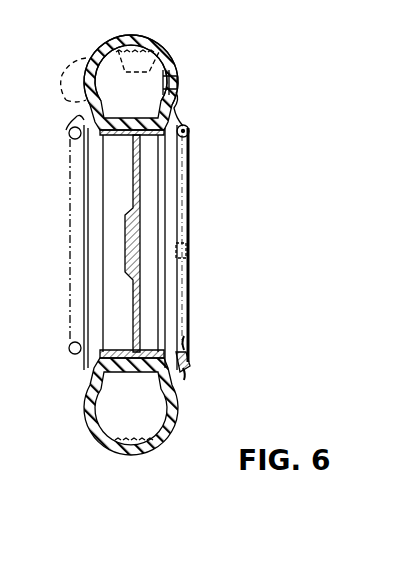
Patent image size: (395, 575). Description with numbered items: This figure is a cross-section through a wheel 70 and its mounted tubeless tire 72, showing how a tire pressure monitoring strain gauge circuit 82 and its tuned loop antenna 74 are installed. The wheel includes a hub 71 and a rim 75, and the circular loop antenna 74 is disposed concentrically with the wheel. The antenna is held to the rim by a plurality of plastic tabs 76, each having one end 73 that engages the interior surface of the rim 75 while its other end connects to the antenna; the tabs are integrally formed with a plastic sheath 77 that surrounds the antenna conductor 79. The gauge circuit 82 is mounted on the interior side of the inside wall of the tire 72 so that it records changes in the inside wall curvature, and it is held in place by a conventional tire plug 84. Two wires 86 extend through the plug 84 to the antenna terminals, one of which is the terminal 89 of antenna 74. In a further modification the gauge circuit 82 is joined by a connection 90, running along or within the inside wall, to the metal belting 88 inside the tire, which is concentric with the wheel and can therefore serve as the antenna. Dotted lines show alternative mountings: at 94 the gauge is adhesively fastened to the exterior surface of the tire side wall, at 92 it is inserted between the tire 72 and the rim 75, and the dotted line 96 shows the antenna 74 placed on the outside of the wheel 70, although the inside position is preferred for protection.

The wheel 70 is at (100, 265).
The hub 71 is at (125, 218).
The tire 72 is at (130, 33).
The tab end 73 is at (176, 386).
The loop antenna 74 is at (189, 236).
The rim 75 is at (69, 133).
The tabs 76 is at (186, 256).
The plastic sheath 77 is at (190, 362).
The antenna conductor 79 is at (187, 337).
The strain gauge circuit 82 is at (165, 82).
The plug 84 is at (178, 82).
The wires 86 is at (186, 97).
The metal belting 88 is at (150, 40).
The antenna terminal 89 is at (190, 130).
The connection 90 is at (166, 56).
The alternative gauge mounting 92 is at (86, 96).
The alternative gauge mounting 94 is at (86, 58).
The alternative antenna position 96 is at (70, 325).